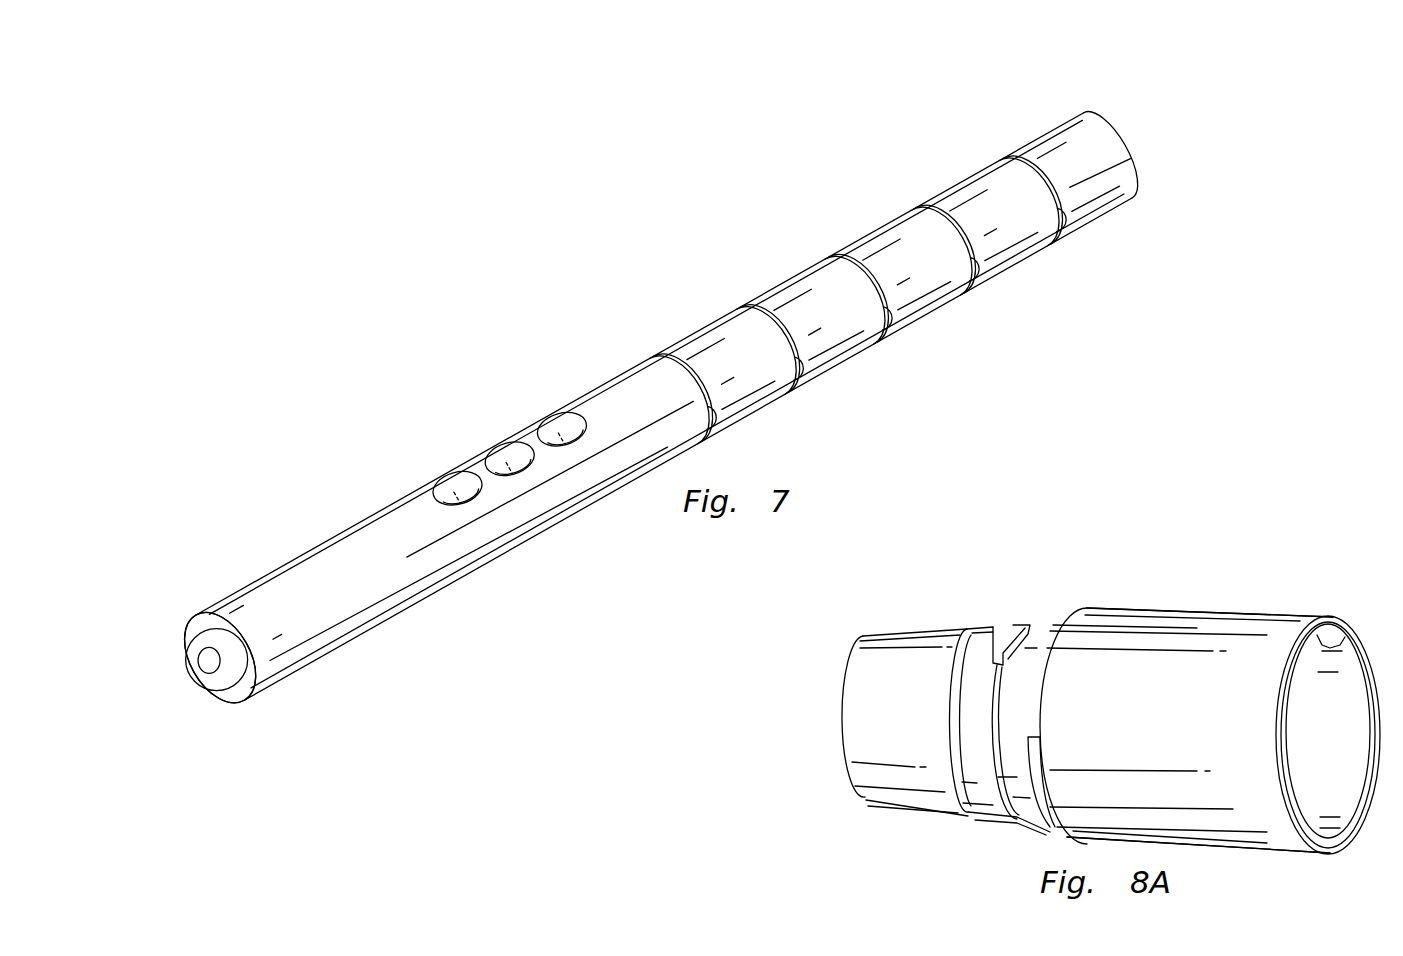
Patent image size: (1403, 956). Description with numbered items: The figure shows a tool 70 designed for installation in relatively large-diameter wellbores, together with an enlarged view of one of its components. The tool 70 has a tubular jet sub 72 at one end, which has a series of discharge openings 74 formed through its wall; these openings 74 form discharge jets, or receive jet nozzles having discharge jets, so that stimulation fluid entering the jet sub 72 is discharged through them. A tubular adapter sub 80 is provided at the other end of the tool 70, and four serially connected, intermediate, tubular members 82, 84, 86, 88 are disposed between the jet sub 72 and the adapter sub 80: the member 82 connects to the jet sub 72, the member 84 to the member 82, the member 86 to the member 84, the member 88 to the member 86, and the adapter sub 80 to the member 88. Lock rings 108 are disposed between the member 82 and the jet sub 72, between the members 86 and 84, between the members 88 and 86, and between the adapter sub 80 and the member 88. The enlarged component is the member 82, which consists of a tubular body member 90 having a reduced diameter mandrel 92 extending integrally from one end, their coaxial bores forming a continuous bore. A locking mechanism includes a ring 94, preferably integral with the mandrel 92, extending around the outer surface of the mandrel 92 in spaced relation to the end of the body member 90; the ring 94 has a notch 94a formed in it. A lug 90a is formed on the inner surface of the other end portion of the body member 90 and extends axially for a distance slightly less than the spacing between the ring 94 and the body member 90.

In FIG. 7, the tool 70 is at (624, 333).
In FIG. 7, the tubular jet sub 72 is at (350, 541).
In FIG. 7, the discharge openings 74 is at (443, 474).
In FIG. 7, the tubular adapter sub 80 is at (1061, 135).
In FIG. 7, the intermediate tubular member 82 is at (713, 333).
In FIG. 8A, the intermediate tubular member 82 is at (1129, 592).
In FIG. 7, the intermediate tubular member 84 is at (798, 284).
In FIG. 7, the intermediate tubular member 86 is at (886, 233).
In FIG. 7, the intermediate tubular member 88 is at (975, 186).
In FIG. 7, the lock rings 108 is at (720, 424).
In FIG. 8A, the tubular body member 90 is at (1204, 608).
In FIG. 8A, the lug 90a is at (1300, 669).
In FIG. 8A, the reduced diameter mandrel 92 is at (925, 629).
In FIG. 8A, the ring 94 is at (957, 723).
In FIG. 8A, the notch 94a is at (1005, 655).